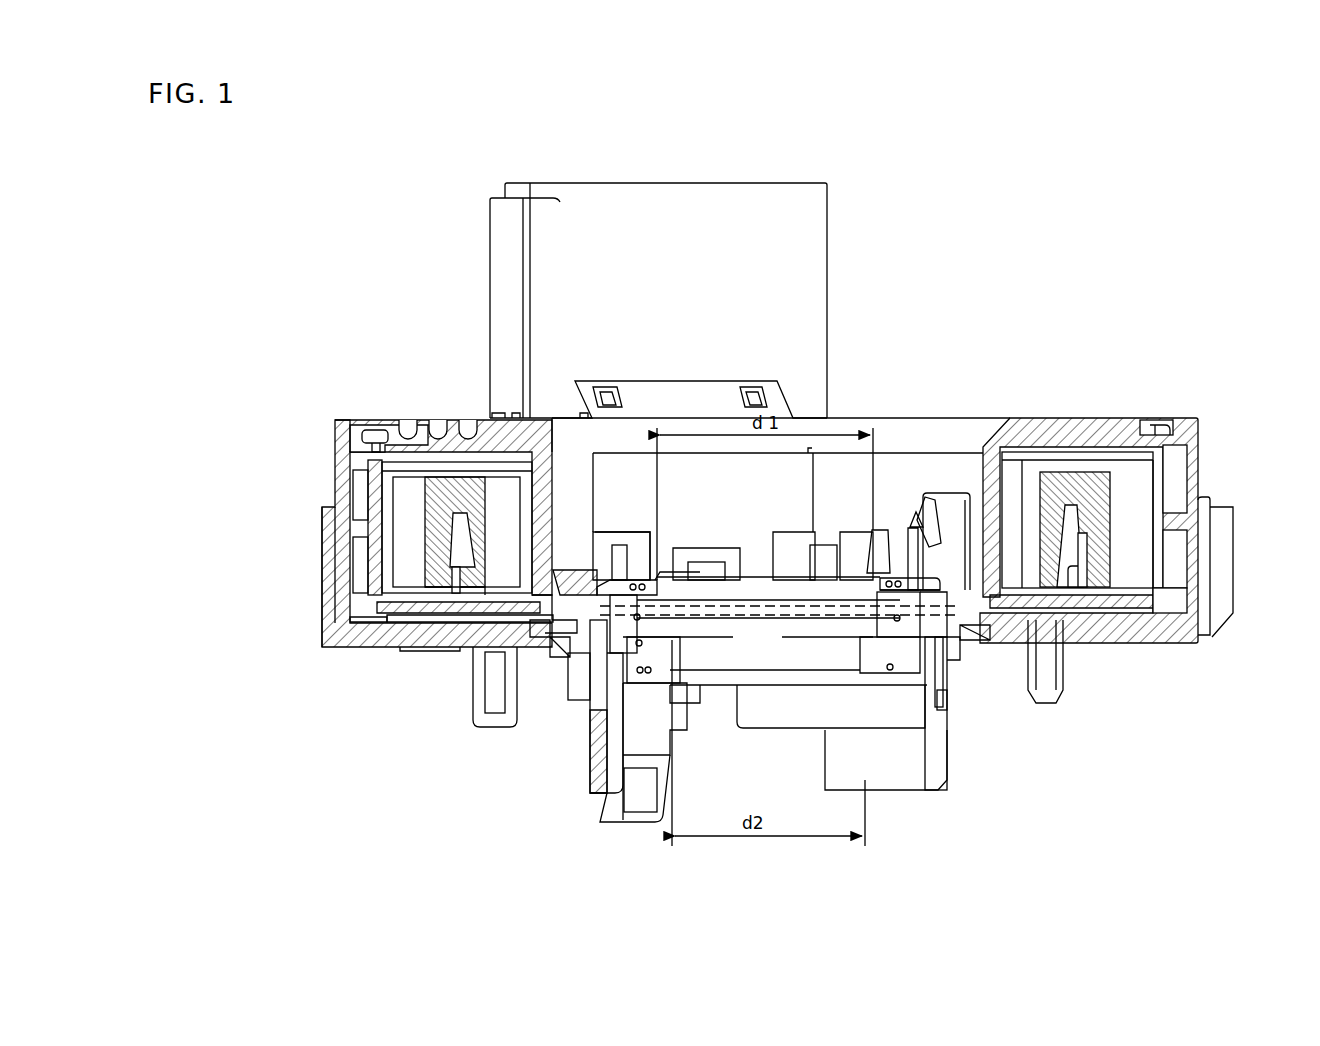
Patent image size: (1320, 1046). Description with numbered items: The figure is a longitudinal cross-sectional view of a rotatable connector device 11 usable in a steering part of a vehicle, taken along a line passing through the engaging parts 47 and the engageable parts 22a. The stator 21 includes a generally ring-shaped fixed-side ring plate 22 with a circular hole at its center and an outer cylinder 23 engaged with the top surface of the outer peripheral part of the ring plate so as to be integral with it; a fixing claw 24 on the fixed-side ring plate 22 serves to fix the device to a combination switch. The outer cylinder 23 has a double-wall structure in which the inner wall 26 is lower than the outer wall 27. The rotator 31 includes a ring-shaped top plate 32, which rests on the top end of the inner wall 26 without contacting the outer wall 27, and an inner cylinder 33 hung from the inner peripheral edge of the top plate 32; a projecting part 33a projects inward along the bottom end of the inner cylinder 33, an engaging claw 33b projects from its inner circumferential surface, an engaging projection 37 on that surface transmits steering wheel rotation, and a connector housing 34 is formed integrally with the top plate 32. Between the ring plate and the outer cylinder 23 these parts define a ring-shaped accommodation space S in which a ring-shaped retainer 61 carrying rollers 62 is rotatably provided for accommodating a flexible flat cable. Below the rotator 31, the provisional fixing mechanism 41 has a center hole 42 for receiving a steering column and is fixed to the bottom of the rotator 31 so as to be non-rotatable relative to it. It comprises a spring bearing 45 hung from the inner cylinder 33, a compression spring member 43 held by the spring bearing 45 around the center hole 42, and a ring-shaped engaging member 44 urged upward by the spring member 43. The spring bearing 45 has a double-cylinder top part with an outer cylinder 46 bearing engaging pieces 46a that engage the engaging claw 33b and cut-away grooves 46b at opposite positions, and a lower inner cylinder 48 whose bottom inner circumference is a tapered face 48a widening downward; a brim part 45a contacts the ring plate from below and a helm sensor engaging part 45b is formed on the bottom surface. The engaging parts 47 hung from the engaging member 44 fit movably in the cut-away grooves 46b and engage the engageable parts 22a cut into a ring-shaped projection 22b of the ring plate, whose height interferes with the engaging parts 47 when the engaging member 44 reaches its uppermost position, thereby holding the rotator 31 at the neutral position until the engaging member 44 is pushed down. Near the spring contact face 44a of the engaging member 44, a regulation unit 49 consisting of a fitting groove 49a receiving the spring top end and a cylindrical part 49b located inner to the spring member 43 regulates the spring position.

The rotatable connector device 11 is at (1114, 192).
The stator 21 is at (384, 573).
The fixed-side ring plate 22 is at (404, 617).
The engageable parts 22a is at (563, 590).
The ring-shaped projection 22b is at (727, 600).
The outer cylinder 23 is at (332, 467).
The fixing claw 24 is at (593, 808).
The inner wall 26 is at (373, 427).
The outer wall 27 is at (343, 425).
The rotator 31 is at (930, 416).
The top plate 32 is at (430, 427).
The inner cylinder 33 is at (563, 472).
The projecting part 33a is at (592, 567).
The engaging claw 33b is at (650, 537).
The connector housing 34 is at (827, 227).
The engaging projection 37 is at (960, 440).
The provisional fixing mechanism 41 is at (877, 525).
The center hole 42 is at (778, 631).
The spring member 43 is at (943, 682).
The engaging member 44 is at (833, 547).
The spring contact face 44a is at (898, 530).
The spring bearing 45 is at (915, 743).
The brim part 45a is at (940, 635).
The helm sensor engaging part 45b is at (947, 777).
The outer cylinder 46 is at (953, 705).
The engaging pieces 46a is at (627, 547).
The cut-away grooves 46b is at (595, 680).
The engaging parts 47 is at (552, 650).
The inner cylinder 48 is at (863, 683).
The tapered face 48a is at (837, 675).
The regulation unit 49 is at (558, 706).
The fitting groove 49a is at (587, 713).
The cylindrical part 49b is at (592, 747).
The retainer 61 is at (383, 620).
The rollers 62 is at (403, 552).
The accommodation space S is at (357, 615).